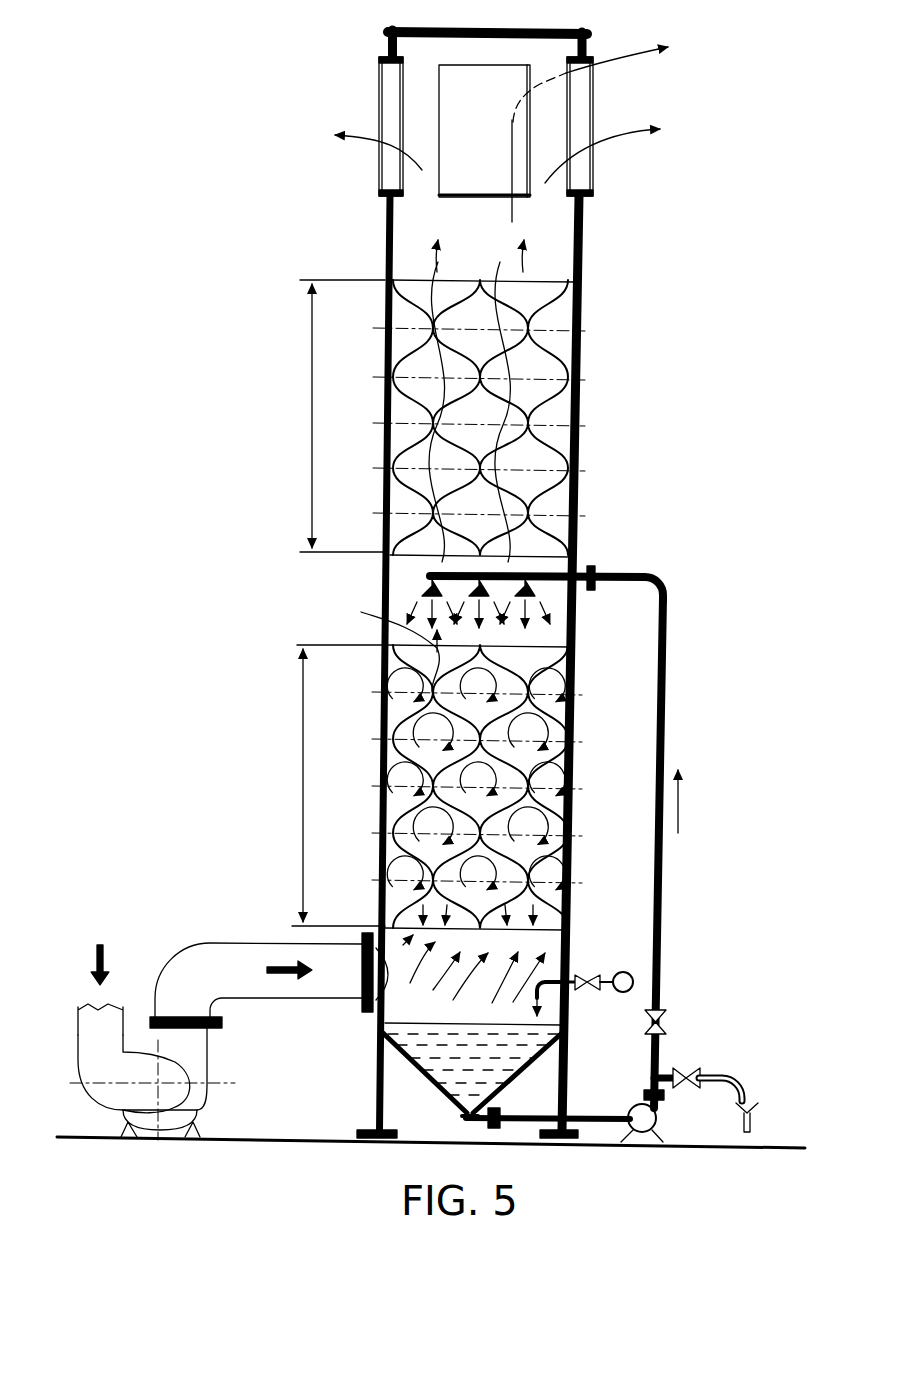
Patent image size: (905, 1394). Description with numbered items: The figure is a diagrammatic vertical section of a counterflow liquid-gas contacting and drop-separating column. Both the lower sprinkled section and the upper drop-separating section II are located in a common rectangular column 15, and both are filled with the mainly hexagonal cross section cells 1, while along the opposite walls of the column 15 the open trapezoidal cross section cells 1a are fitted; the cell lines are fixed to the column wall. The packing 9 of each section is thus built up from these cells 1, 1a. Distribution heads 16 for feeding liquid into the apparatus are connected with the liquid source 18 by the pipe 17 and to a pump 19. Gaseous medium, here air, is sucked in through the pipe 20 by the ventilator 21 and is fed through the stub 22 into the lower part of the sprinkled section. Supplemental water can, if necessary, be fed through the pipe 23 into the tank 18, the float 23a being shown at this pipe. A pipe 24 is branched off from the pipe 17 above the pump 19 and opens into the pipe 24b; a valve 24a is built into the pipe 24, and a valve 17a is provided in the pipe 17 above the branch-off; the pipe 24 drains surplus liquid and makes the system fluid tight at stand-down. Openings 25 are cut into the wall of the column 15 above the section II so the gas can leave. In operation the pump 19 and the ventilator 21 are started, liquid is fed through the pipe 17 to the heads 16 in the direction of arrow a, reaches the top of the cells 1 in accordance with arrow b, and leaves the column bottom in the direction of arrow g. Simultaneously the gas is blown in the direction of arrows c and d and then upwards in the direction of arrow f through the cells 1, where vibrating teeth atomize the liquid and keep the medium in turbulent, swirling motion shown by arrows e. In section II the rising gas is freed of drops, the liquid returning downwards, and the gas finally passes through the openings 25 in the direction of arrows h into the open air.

The cells 1 is at (428, 758).
The open trapezoidal cross section cells 1a is at (593, 760).
The upper packing bed 9 is at (584, 470).
The column 15 is at (582, 297).
The distribution heads 16 is at (425, 590).
The pipe 17 is at (670, 648).
The valve 17a is at (647, 1030).
The liquid source 18 is at (427, 1053).
The pump 19 is at (656, 1118).
The pipe 20 is at (100, 1057).
The ventilator 21 is at (193, 1093).
The stub 22 is at (337, 980).
The pipe 23 is at (566, 997).
The float 23a is at (630, 972).
The pipe 24 is at (736, 1075).
The valve 24a is at (683, 1068).
The pipe 24b is at (757, 1108).
The openings 25 is at (467, 110).
The column section II is at (332, 603).
The arrow a is at (682, 814).
The arrow b is at (540, 610).
The arrow c is at (93, 962).
The arrow d is at (483, 1002).
The arrows e is at (568, 790).
The arrow f is at (445, 357).
The arrow g is at (392, 813).
The arrows h is at (648, 50).